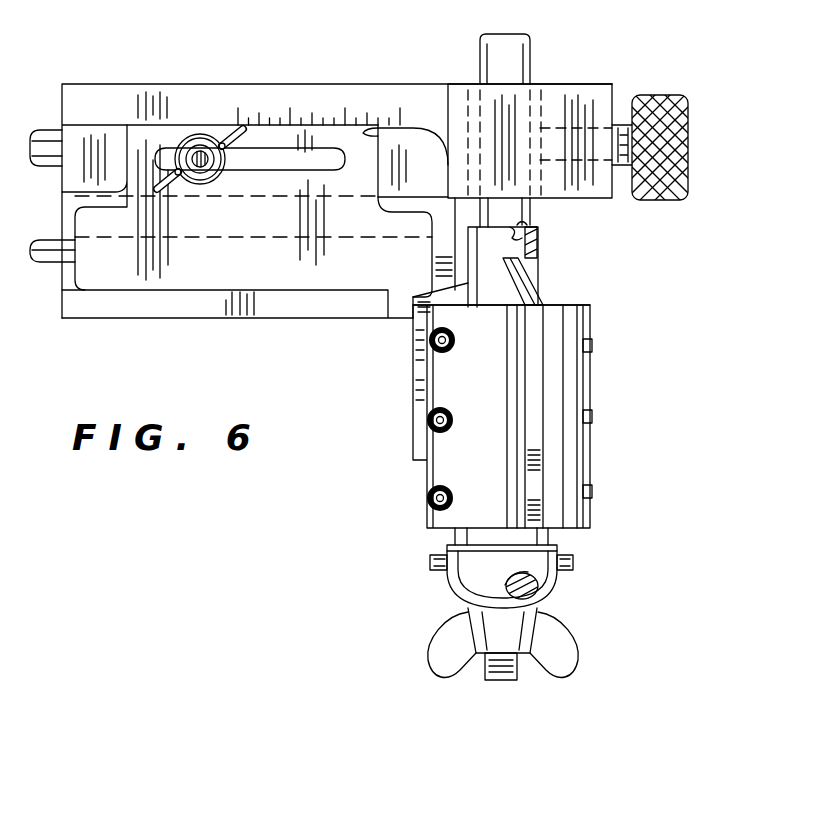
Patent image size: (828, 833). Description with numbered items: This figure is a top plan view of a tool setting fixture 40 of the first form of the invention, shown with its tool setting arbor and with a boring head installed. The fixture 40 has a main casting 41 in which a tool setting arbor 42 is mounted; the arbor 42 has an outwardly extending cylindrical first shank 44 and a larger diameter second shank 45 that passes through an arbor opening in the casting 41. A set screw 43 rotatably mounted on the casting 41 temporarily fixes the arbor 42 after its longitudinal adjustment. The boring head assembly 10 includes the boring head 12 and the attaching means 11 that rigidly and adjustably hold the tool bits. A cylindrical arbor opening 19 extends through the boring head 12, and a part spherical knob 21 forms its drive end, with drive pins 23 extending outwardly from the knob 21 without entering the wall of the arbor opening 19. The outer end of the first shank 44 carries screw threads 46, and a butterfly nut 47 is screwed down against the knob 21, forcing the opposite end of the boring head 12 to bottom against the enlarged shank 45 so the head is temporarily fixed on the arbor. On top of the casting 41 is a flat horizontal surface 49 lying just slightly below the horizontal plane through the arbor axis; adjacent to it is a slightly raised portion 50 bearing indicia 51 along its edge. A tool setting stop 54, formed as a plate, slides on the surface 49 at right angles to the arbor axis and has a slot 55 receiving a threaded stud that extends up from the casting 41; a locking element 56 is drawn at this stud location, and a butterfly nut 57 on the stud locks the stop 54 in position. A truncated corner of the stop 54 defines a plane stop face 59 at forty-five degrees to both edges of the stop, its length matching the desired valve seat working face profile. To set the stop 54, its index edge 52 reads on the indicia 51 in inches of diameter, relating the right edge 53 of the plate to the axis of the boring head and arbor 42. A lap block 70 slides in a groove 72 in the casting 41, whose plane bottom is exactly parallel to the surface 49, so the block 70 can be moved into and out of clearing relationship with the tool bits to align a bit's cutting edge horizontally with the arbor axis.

The boring head assembly 10 is at (395, 478).
The attaching means 11 is at (592, 345).
The boring head 12 is at (565, 323).
The arbor opening 19 is at (518, 227).
The spherical knob 21 is at (453, 587).
The drive pins 23 is at (430, 560).
The tool setting fixture 40 is at (558, 80).
The main casting 41 is at (92, 88).
The tool setting arbor 42 is at (482, 62).
The set screw 43 is at (620, 127).
The first shank 44 is at (503, 228).
The second shank 45 is at (515, 53).
The screw threads 46 is at (502, 681).
The butterfly nut 47 is at (437, 652).
The flat horizontal surface 49 is at (78, 164).
The raised portion 50 is at (175, 90).
The indicia 51 is at (270, 97).
The index edge 52 is at (363, 130).
The right edge 53 is at (433, 228).
The tool setting stop 54 is at (197, 267).
The slot 55 is at (330, 166).
The clamping knob 56 is at (198, 152).
The butterfly nut 57 is at (170, 178).
The plane stop face 59 is at (425, 283).
The lap block 70 is at (447, 243).
The groove 72 is at (65, 276).